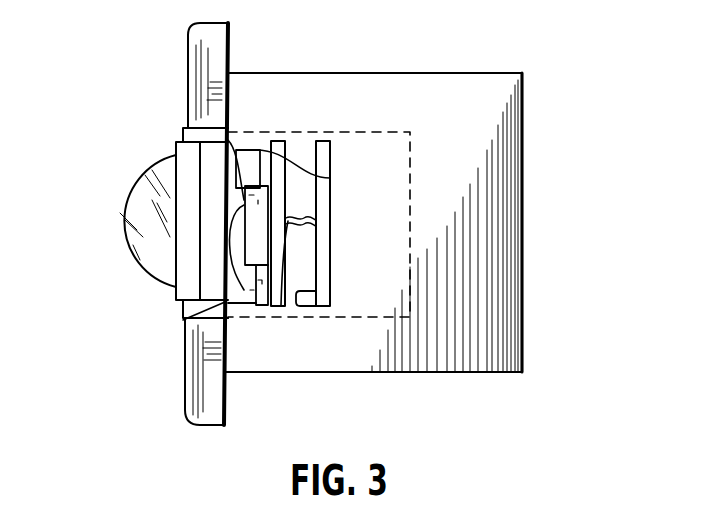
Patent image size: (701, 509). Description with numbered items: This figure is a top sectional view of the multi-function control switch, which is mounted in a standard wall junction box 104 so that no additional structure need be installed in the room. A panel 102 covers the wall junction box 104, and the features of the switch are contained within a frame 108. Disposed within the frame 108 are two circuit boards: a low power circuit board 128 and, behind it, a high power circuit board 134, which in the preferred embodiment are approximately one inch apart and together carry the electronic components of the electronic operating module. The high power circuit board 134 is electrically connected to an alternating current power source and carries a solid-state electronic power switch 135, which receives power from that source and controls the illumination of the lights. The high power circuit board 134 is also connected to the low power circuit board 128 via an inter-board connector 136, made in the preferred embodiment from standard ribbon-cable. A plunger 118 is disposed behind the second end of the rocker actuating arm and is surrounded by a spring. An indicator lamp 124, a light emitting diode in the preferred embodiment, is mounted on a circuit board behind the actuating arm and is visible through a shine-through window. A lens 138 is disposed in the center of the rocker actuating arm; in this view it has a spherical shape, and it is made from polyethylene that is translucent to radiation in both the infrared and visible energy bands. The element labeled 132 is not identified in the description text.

The panel 102 is at (210, 98).
The wall junction box 104 is at (525, 173).
The frame 108 is at (410, 272).
The plunger 118 is at (190, 320).
The indicator lamp 124 is at (330, 178).
The low power circuit board 128 is at (277, 143).
The mounting body 132 is at (225, 135).
The high power circuit board 134 is at (322, 150).
The solid-state electronic power switch 135 is at (308, 307).
The inter-board connector 136 is at (281, 305).
The lens 138 is at (136, 287).